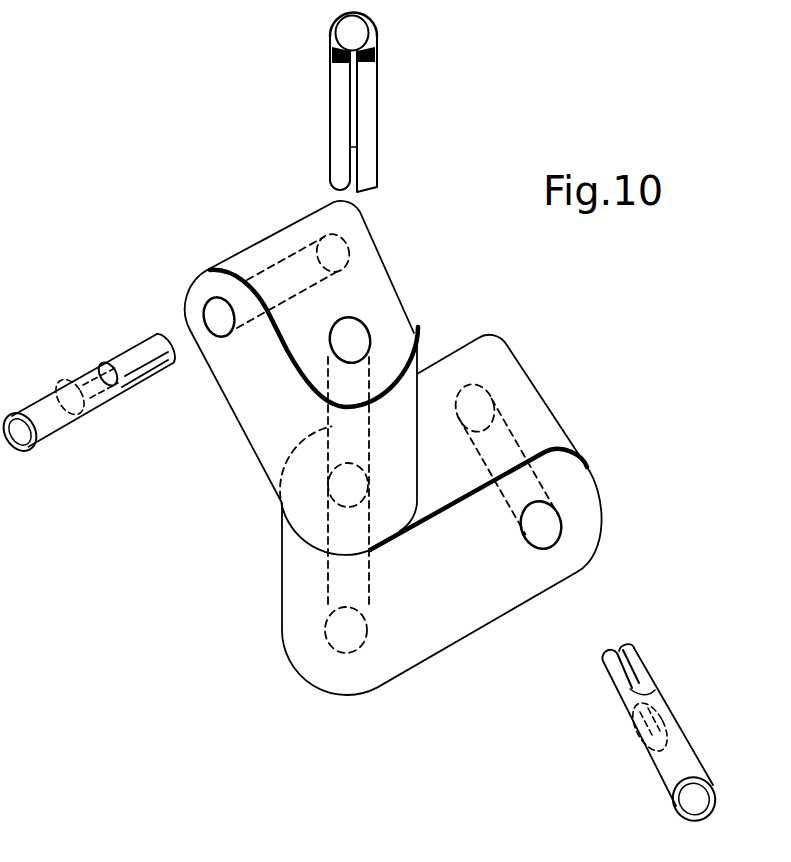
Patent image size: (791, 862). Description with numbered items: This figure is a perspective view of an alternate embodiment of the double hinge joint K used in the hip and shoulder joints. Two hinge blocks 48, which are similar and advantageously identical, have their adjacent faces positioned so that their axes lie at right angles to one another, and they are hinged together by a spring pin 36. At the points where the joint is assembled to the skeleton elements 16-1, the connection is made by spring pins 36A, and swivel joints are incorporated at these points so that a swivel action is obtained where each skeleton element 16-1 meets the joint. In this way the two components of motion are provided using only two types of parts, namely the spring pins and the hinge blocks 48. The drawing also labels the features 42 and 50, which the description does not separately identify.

The skeleton element 16-1 is at (43, 431).
The spring pin 36 is at (338, 142).
The spring pin 36A is at (128, 388).
The eye of cotter pin 42 is at (352, 83).
The hinge block 48 is at (270, 467).
The pin hole 50 is at (204, 315).
The double hinge joint K is at (545, 285).